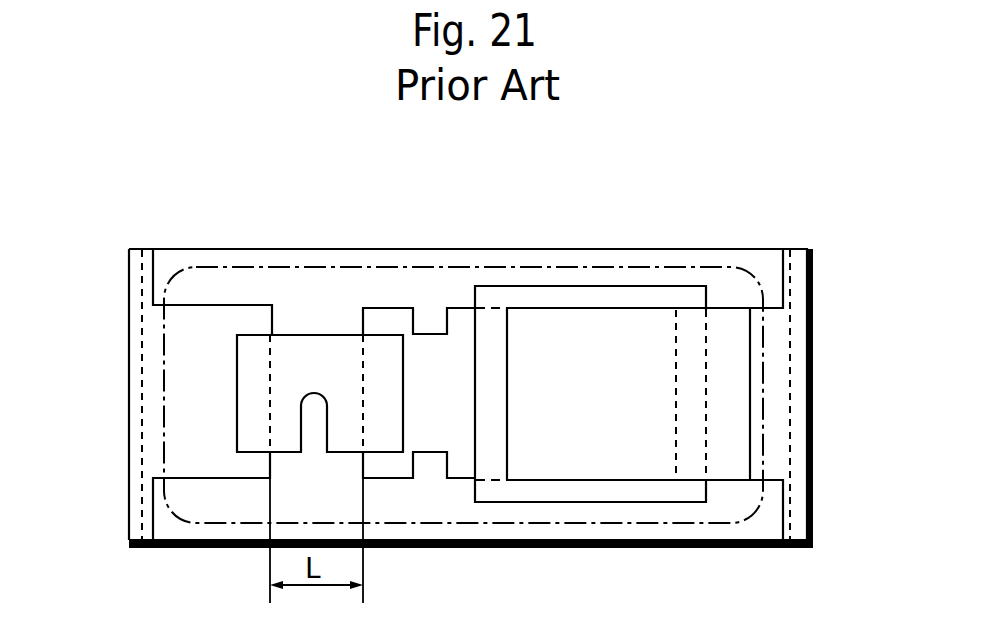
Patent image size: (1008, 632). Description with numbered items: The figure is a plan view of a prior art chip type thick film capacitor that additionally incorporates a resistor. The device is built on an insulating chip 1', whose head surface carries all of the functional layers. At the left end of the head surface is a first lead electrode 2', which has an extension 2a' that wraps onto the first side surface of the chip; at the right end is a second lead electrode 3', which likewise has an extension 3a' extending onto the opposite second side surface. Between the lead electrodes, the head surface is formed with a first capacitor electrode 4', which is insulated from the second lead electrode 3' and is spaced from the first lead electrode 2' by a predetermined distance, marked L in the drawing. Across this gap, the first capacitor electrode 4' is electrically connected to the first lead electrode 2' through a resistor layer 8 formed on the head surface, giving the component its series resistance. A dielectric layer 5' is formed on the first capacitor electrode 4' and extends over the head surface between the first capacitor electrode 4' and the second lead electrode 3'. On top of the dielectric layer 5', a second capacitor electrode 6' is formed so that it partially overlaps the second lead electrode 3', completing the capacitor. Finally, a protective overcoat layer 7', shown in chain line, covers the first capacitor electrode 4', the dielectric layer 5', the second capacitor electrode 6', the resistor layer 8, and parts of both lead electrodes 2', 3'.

The insulating chip 1' is at (468, 356).
The first lead electrode 2' is at (102, 395).
The extension of first lead electrode 2a' is at (84, 394).
The second lead electrode 3' is at (818, 395).
The extension of second lead electrode 3a' is at (505, 398).
The first capacitor electrode 4' is at (468, 357).
The dielectric layer 5' is at (590, 338).
The second capacitor electrode 6' is at (613, 326).
The protective overcoat layer 7' is at (463, 347).
The resistor layer 8 is at (327, 365).